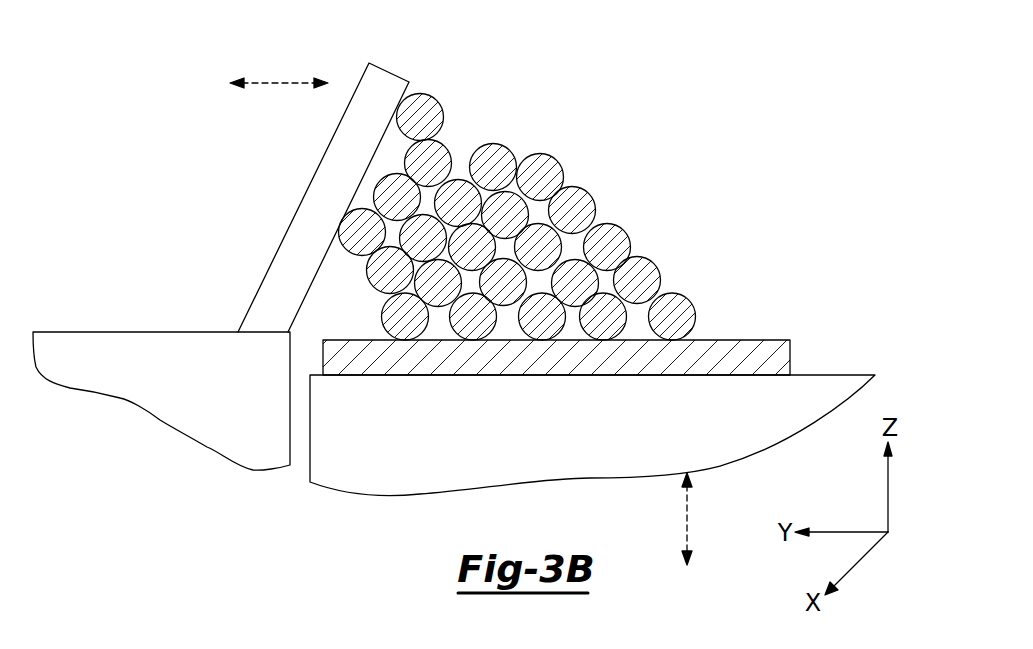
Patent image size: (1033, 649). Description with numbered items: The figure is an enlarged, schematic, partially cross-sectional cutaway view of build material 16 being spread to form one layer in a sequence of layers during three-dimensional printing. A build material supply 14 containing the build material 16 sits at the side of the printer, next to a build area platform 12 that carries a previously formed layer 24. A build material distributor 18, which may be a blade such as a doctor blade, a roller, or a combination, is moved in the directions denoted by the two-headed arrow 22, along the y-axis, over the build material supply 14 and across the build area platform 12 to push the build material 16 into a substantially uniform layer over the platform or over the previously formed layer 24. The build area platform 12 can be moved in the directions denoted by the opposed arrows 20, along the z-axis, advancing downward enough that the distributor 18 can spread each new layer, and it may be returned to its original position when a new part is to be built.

The build area platform 12 is at (713, 443).
The build material supply 14 is at (107, 377).
The build material 16 is at (612, 233).
The build material distributor 18 is at (332, 168).
The opposed arrows 20 is at (683, 518).
The two-headed arrow 22 is at (282, 82).
The layer 24 is at (592, 375).